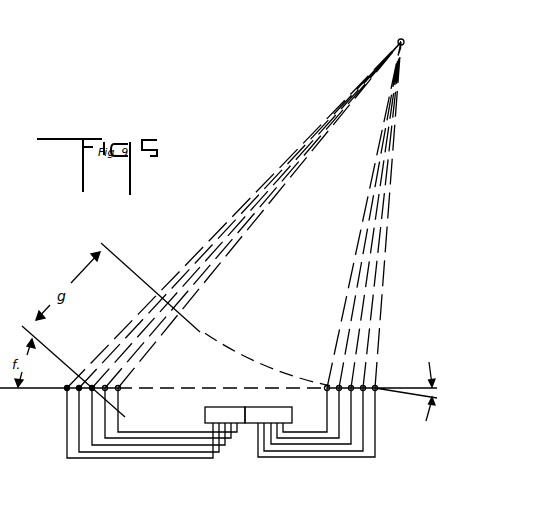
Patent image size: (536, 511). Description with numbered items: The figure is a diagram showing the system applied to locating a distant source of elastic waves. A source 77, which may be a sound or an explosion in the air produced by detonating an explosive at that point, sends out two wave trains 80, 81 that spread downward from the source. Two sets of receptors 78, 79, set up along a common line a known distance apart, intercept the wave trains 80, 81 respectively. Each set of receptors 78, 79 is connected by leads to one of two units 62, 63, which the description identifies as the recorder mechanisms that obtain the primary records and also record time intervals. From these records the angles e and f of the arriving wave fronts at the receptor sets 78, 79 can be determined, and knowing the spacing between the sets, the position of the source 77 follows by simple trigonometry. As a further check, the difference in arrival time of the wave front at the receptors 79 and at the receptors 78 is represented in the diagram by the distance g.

The source of elastic waves 77 is at (398, 40).
The wave train 80 is at (219, 243).
The wave train 81 is at (380, 283).
The set of receptors 78 is at (104, 383).
The set of receptors 79 is at (377, 372).
The first circuit unit 62 is at (210, 418).
The second circuit unit 63 is at (258, 418).